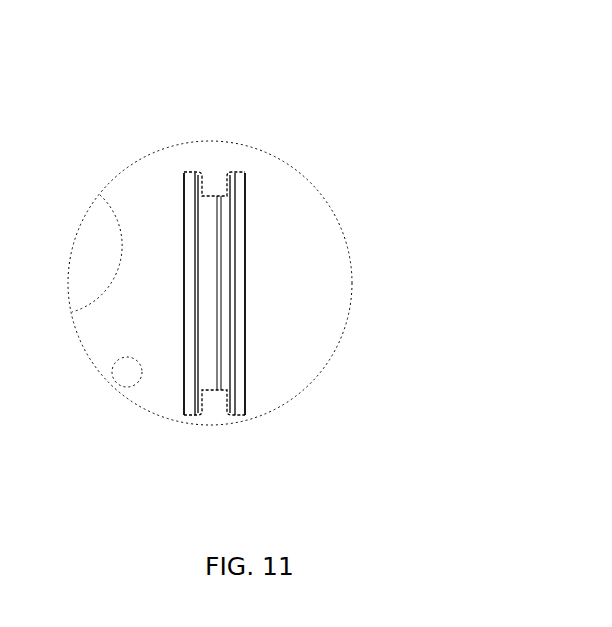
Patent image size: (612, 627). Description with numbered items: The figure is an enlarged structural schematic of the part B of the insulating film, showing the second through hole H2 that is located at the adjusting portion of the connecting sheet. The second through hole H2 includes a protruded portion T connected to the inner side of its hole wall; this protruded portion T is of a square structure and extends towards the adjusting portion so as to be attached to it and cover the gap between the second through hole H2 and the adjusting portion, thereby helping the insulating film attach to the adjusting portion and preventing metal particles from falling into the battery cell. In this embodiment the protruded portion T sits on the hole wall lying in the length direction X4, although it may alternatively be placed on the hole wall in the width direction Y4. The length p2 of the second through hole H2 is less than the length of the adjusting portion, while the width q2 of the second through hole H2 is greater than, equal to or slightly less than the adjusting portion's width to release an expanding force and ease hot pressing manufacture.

The part B is at (210, 323).
The second through hole H2 is at (237, 227).
The protruded portion T is at (211, 195).
The length of the second through hole p2 is at (184, 415).
The width of the second through hole q2 is at (245, 417).
The length direction X4 is at (392, 208).
The width direction Y4 is at (250, 83).